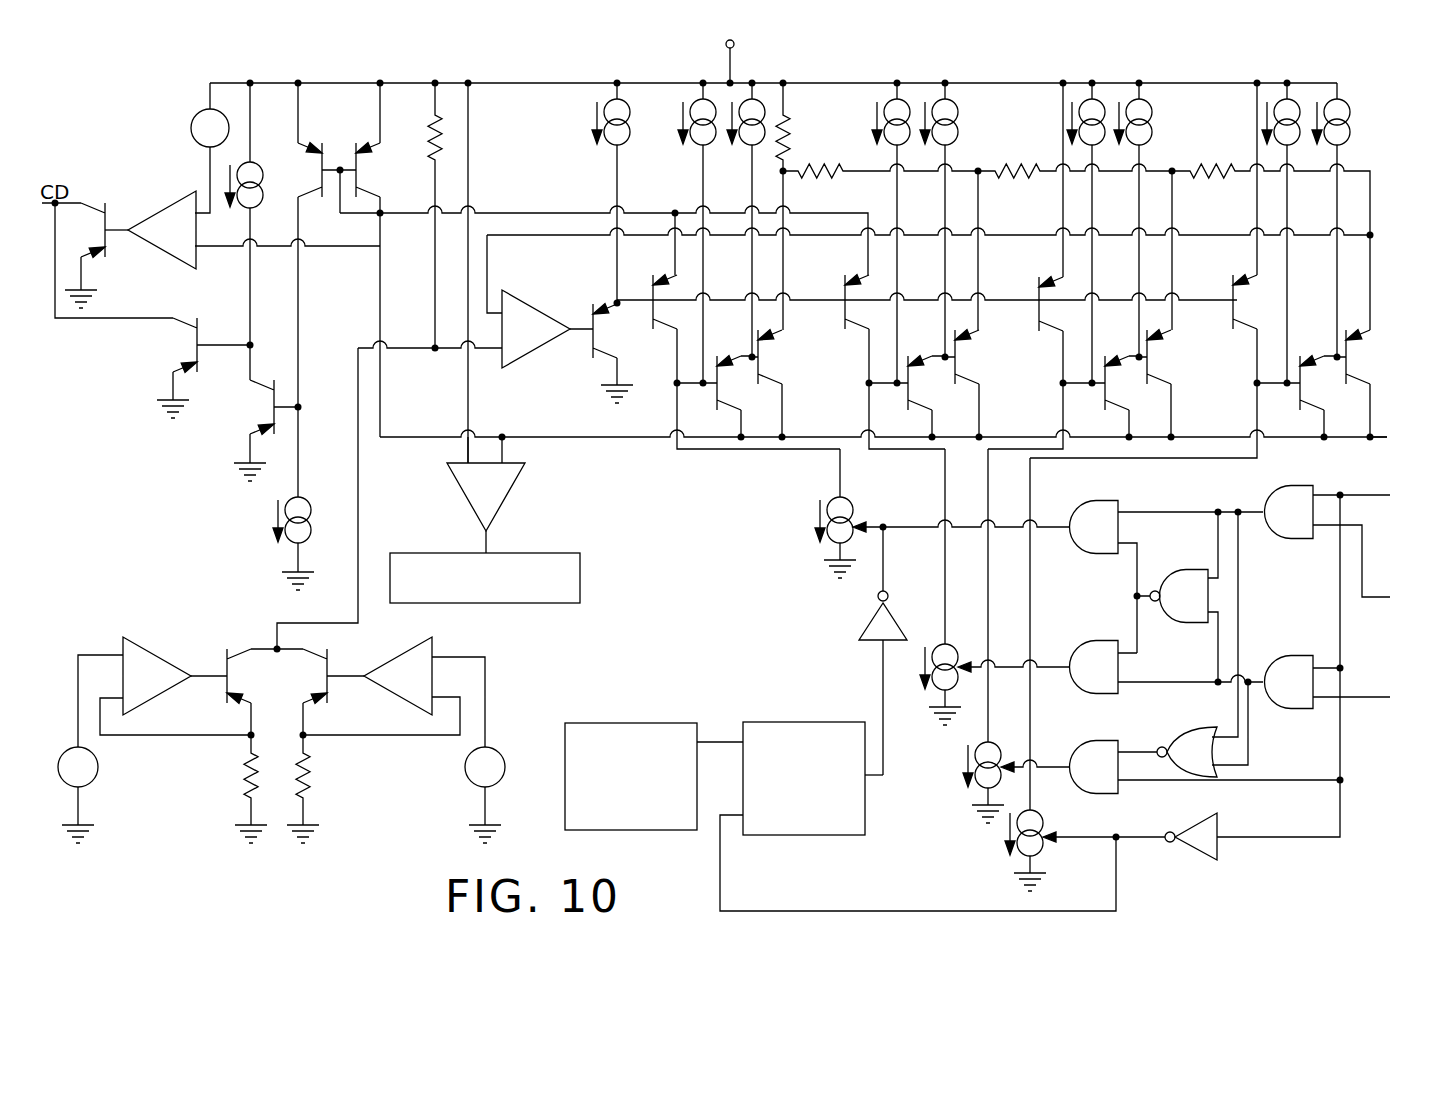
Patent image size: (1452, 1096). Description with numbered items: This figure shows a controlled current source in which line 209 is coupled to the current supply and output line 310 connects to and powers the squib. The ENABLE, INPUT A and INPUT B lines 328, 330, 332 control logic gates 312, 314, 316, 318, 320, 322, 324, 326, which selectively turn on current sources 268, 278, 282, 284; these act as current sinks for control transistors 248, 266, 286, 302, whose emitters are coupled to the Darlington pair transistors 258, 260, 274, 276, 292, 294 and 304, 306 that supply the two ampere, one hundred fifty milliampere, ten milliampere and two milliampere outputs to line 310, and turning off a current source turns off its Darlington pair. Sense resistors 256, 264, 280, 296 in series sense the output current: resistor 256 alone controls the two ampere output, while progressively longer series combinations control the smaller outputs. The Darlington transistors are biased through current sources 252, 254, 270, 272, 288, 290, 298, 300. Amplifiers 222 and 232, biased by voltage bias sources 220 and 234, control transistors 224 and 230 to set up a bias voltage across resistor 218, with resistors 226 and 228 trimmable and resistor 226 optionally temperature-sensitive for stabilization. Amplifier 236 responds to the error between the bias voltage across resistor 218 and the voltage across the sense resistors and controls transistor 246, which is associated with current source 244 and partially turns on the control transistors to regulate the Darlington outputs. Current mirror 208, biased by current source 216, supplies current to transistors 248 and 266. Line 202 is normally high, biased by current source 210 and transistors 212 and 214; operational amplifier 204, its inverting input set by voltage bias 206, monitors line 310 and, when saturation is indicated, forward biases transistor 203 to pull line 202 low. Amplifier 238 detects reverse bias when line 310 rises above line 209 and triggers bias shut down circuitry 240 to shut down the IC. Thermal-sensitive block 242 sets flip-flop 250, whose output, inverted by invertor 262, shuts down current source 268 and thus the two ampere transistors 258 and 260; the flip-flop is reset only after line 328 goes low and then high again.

The line 202 is at (78, 203).
The transistor 203 is at (108, 225).
The operational amplifier 204 is at (168, 240).
The voltage bias 206 is at (193, 128).
The current mirror 208 is at (339, 138).
The line 209 is at (726, 47).
The current source 210 is at (255, 172).
The transistor 212 is at (187, 334).
The transistor 214 is at (270, 400).
The current source 216 is at (305, 505).
The resistor 218 is at (448, 145).
The voltage bias source 220 is at (88, 778).
The amplifier 222 is at (157, 667).
The transistor 224 is at (223, 662).
The resistor 226 is at (242, 778).
The resistor 228 is at (310, 770).
The transistor 230 is at (333, 667).
The amplifier 232 is at (430, 645).
The voltage bias source 234 is at (500, 770).
The amplifier 236 is at (532, 338).
The amplifier 238 is at (490, 497).
The bias shut down circuitry 240 is at (577, 590).
The thermal-sensitive circuit 242 is at (628, 737).
The current source 244 is at (610, 136).
The transistor 246 is at (590, 322).
The control transistor 248 is at (650, 310).
The flip-flop 250 is at (843, 733).
The current source 252 is at (704, 133).
The current source 254 is at (748, 137).
The resistor 256 is at (788, 125).
The Darlington pair transistor 258 is at (716, 392).
The Darlington pair transistor 260 is at (765, 362).
The invertor 262 is at (876, 620).
The resistor 264 is at (822, 165).
The control transistor 266 is at (843, 292).
The current source 268 is at (837, 500).
The current source 270 is at (902, 108).
The current source 272 is at (957, 110).
The Darlington pair transistor 274 is at (907, 393).
The Darlington pair transistor 276 is at (958, 360).
The current source 278 is at (932, 690).
The resistor 280 is at (1020, 167).
The current source 282 is at (983, 787).
The current source 284 is at (1022, 858).
The control transistor 286 is at (1040, 333).
The current source 288 is at (1087, 108).
The current source 290 is at (1148, 108).
The Darlington pair transistor 292 is at (1105, 393).
The Darlington pair transistor 294 is at (1150, 367).
The resistor 296 is at (1215, 167).
The current source 298 is at (1282, 108).
The current source 300 is at (1343, 110).
The control transistor 302 is at (1233, 297).
The Darlington pair transistor 304 is at (1300, 393).
The Darlington pair transistor 306 is at (1352, 360).
The output line 310 is at (1382, 435).
The logic gate 312 is at (1095, 517).
The logic gate 314 is at (1090, 658).
The logic gate 316 is at (1090, 760).
The logic gate 318 is at (1192, 597).
The logic gate 320 is at (1193, 742).
The logic gate 322 is at (1283, 502).
The logic gate 324 is at (1285, 695).
The logic gate 326 is at (1202, 845).
The ENABLE line 328 is at (1383, 492).
The INPUT A line 330 is at (1380, 585).
The INPUT B line 332 is at (1368, 698).